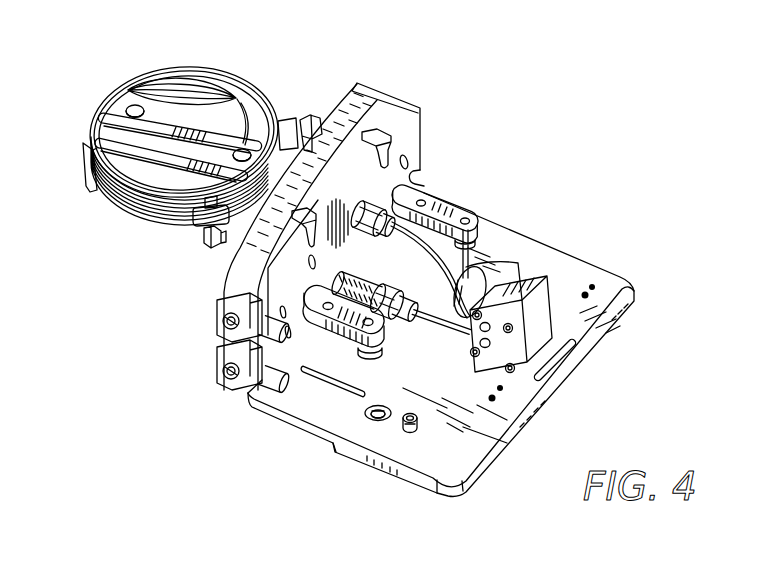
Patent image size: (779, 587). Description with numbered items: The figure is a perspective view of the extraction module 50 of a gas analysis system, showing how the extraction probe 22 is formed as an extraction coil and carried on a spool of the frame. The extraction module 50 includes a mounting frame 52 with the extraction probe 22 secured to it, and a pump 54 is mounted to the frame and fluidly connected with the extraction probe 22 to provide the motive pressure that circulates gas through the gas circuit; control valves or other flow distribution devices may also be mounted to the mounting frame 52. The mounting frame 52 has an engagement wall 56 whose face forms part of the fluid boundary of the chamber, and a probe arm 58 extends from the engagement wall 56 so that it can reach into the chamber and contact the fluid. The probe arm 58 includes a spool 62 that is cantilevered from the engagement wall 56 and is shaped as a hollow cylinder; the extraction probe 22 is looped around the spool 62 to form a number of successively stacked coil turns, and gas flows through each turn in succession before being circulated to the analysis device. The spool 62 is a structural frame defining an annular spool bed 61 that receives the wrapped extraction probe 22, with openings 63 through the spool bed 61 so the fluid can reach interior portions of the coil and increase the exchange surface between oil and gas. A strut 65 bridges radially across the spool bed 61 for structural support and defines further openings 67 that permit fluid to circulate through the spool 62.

The extraction module 50 is at (668, 301).
The mounting frame 52 is at (560, 256).
The pump 54 is at (494, 283).
The engagement wall 56 is at (373, 90).
The probe arm 58 is at (202, 116).
The spool bed 61 is at (231, 99).
The spool 62 is at (237, 113).
The openings 63 is at (196, 82).
The strut 65 is at (157, 124).
The openings 67 is at (243, 126).
The extraction probe 22 is at (118, 207).